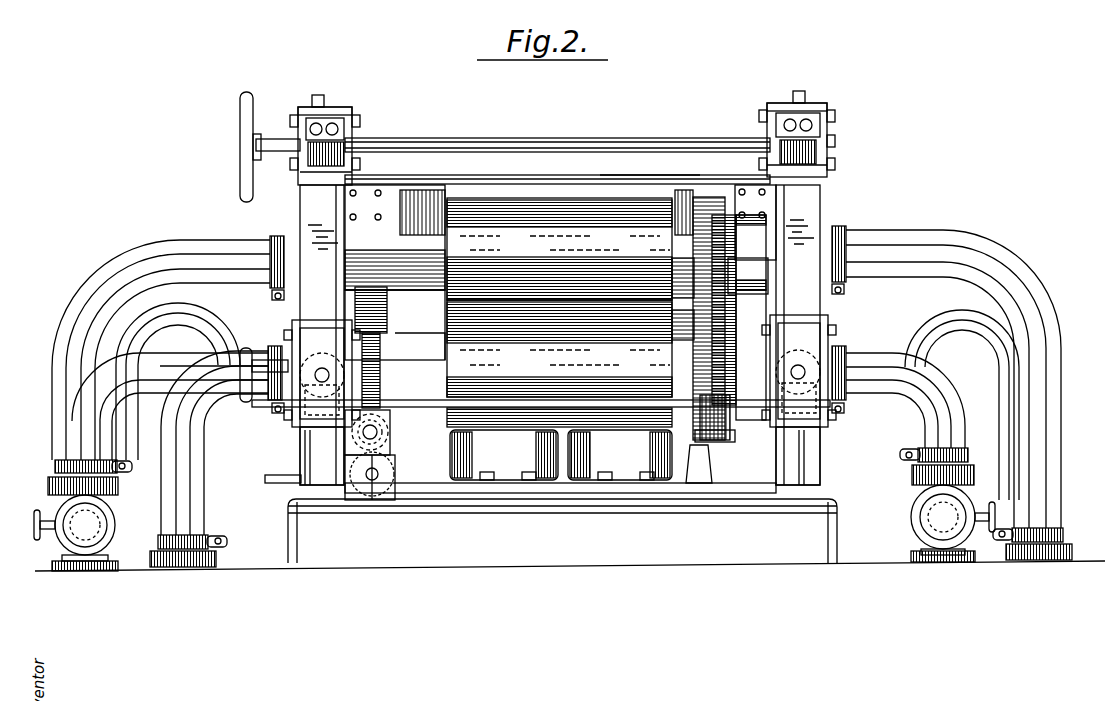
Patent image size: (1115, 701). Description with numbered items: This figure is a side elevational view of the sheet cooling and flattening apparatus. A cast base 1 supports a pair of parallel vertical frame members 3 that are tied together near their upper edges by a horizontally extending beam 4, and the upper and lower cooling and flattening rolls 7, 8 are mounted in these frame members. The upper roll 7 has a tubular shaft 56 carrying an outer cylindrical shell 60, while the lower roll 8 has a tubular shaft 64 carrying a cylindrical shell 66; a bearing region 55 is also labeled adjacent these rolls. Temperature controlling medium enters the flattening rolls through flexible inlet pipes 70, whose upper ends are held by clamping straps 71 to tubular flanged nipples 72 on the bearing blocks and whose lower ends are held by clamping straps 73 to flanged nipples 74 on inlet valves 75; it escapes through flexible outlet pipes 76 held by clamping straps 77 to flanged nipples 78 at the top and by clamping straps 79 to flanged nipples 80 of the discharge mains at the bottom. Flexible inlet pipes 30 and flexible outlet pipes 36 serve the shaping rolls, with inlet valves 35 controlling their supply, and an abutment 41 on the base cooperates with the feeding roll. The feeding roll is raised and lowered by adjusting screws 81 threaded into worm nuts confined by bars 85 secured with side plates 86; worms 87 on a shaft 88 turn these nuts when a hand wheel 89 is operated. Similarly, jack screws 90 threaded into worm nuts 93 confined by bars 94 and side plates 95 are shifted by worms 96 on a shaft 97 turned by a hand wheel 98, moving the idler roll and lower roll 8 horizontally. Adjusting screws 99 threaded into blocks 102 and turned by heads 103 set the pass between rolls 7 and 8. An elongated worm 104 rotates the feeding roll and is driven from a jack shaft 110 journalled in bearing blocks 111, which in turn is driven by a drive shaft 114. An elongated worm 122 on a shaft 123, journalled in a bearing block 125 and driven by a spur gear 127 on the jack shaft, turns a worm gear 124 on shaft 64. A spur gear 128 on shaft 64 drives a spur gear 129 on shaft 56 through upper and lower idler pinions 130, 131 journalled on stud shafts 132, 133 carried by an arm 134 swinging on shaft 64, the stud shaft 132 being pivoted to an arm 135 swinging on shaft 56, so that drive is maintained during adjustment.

The base 1 is at (290, 520).
The frame members 3 is at (312, 201).
The horizontally extending beam 4 is at (642, 181).
The upper cooling and flattening roll 7 is at (556, 198).
The lower cooling and flattening roll 8 is at (540, 430).
The flexible inlet pipes 30 is at (185, 320).
The inlet valves 35 is at (768, 437).
The flexible outlet pipes 36 is at (956, 318).
The abutment 41 is at (700, 460).
The bearing box 55 is at (395, 325).
The tubular shaft 56 is at (395, 237).
The outer cylindrical shell 60 is at (559, 249).
The tubular shaft 64 is at (398, 352).
The cylindrical shell 66 is at (559, 363).
The flexible inlet pipes 70 is at (122, 272).
The clamping straps 71 is at (271, 238).
The tubular flanged nipples 72 is at (270, 292).
The clamping straps 73 is at (62, 466).
The flanged nipples 74 is at (58, 487).
The inlet valves 75 is at (100, 520).
The flexible outlet pipes 76 is at (172, 446).
The clamping straps 77 is at (270, 346).
The flanged nipples 78 is at (845, 287).
The clamping straps 79 is at (208, 537).
The flanged nipples 80 is at (215, 556).
The adjusting screws 81 is at (316, 97).
The bars 85 is at (336, 114).
The side plates 86 is at (297, 118).
The worms 87 is at (336, 150).
The shaft 88 is at (556, 140).
The hand wheel 89 is at (242, 126).
The jack screws 90 is at (322, 370).
The worm nuts 93 is at (560, 371).
The bars 94 is at (561, 457).
The side plates 95 is at (290, 425).
The worms 96 is at (560, 456).
The shaft 97 is at (272, 410).
The hand wheel 98 is at (252, 405).
The adjusting screws 99 is at (300, 132).
The blocks 102 is at (330, 156).
The heads 103 is at (342, 132).
The elongated worm 104 is at (388, 297).
The jack shaft 110 is at (370, 478).
The bearing blocks 111 is at (385, 492).
The drive shaft 114 is at (268, 479).
The elongated worm 122 is at (390, 422).
The shaft 123 is at (392, 433).
The worm gear 124 is at (384, 370).
The bearing block 125 is at (390, 446).
The spur gear 127 is at (372, 498).
The spur gear 128 is at (710, 418).
The spur gear 129 is at (703, 214).
The upper idler pinion 130 is at (676, 262).
The lower idler pinion 131 is at (690, 326).
The stud shaft 132 is at (766, 290).
The stud shaft 133 is at (736, 321).
The arm 134 is at (726, 402).
The arm 135 is at (747, 256).